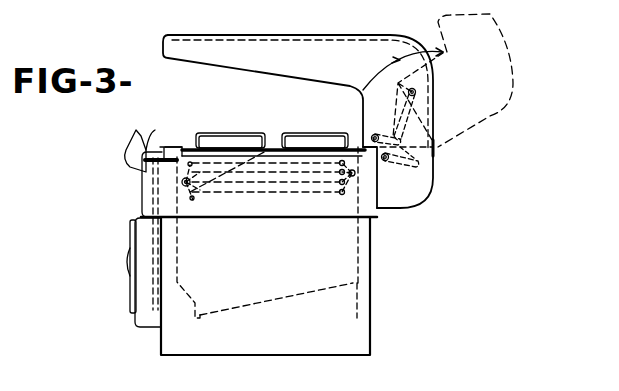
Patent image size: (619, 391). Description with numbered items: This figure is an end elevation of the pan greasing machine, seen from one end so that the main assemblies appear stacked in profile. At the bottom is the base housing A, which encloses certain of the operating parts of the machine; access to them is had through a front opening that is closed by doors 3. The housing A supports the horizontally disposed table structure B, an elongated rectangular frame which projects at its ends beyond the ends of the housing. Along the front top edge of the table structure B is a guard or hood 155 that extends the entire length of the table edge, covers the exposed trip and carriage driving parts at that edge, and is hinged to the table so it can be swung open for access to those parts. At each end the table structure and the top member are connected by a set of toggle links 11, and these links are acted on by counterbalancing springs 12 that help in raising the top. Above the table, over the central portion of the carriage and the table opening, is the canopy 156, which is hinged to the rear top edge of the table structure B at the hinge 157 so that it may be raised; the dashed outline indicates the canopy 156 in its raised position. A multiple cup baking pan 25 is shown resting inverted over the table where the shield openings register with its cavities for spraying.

The canopy 156 is at (273, 40).
The hinge of the canopy 157 is at (436, 148).
The guard or hood 155 is at (152, 128).
The toggle links 11 is at (243, 163).
The multiple cup baking pan 25 is at (311, 118).
The counterbalancing springs 12 is at (308, 192).
The doors 3 is at (131, 240).
The base housing A is at (160, 344).
The table structure B is at (227, 213).